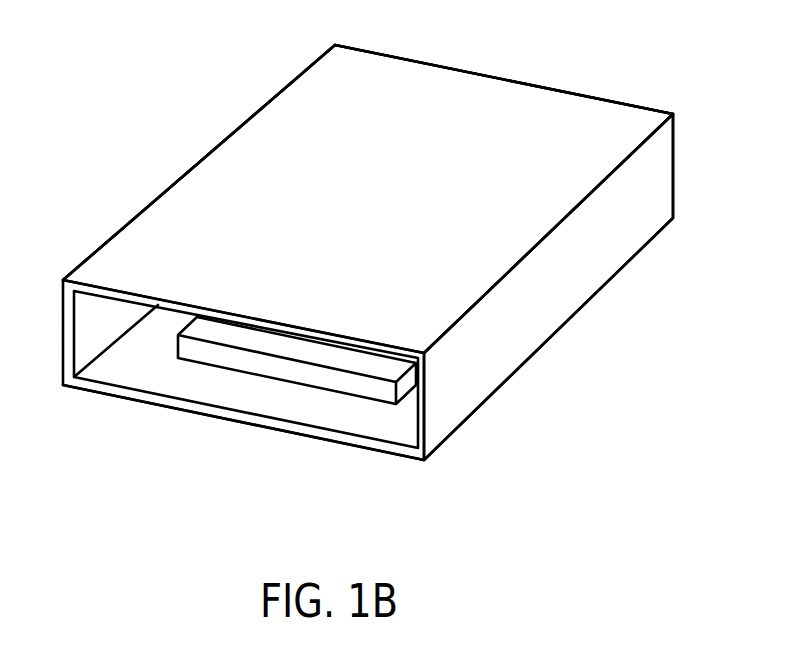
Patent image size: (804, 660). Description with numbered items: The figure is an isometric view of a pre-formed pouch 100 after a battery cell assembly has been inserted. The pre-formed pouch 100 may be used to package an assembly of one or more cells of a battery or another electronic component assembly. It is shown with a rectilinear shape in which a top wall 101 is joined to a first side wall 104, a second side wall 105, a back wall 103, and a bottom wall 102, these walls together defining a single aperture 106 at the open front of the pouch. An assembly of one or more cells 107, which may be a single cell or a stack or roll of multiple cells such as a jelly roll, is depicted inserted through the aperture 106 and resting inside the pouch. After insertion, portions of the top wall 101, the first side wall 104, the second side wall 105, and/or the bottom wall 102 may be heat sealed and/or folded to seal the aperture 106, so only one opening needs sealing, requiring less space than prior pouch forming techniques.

The pre-formed pouch 100 is at (478, 425).
The top wall 101 is at (385, 80).
The bottom wall 102 is at (357, 447).
The back wall 103 is at (556, 91).
The first side wall 104 is at (102, 246).
The second side wall 105 is at (547, 315).
The aperture 106 is at (172, 362).
The assembly of one or more cells 107 is at (255, 365).